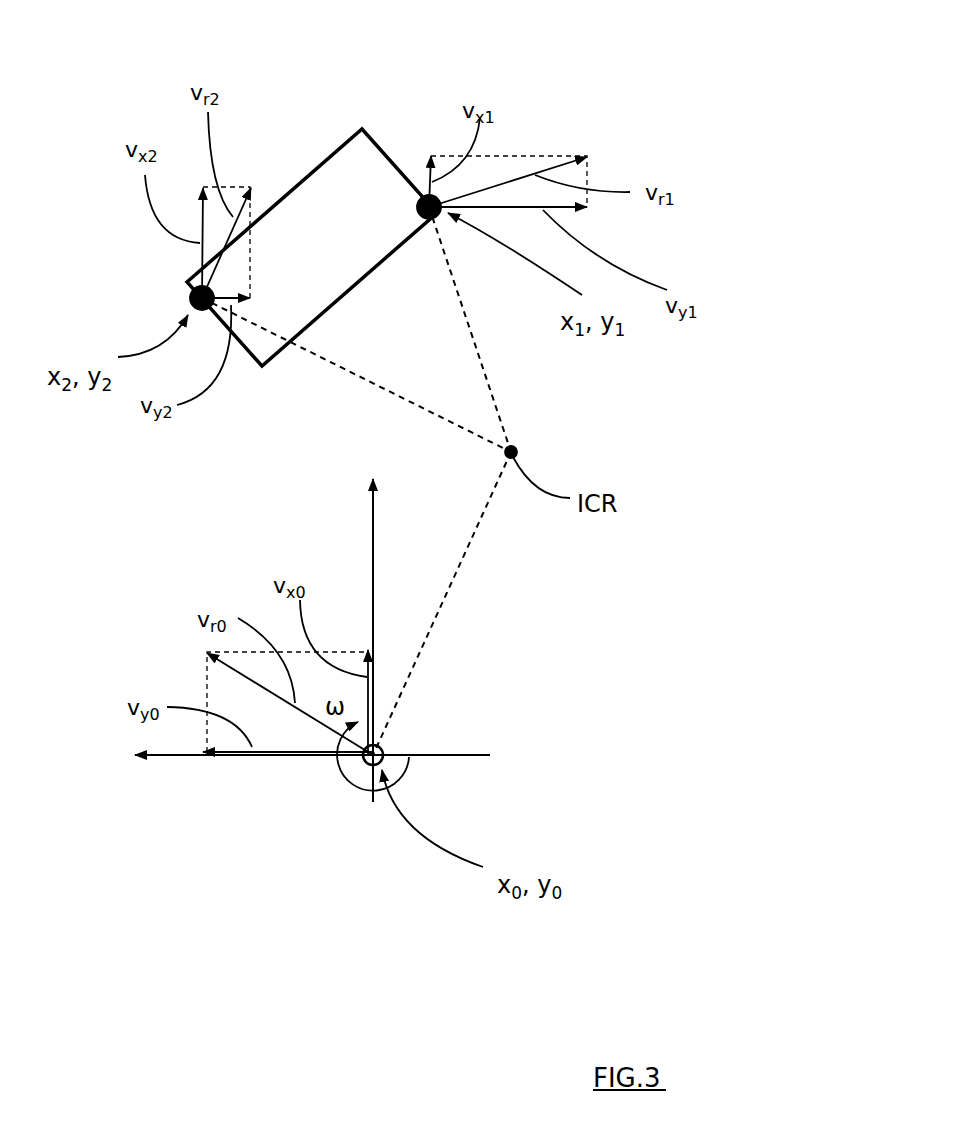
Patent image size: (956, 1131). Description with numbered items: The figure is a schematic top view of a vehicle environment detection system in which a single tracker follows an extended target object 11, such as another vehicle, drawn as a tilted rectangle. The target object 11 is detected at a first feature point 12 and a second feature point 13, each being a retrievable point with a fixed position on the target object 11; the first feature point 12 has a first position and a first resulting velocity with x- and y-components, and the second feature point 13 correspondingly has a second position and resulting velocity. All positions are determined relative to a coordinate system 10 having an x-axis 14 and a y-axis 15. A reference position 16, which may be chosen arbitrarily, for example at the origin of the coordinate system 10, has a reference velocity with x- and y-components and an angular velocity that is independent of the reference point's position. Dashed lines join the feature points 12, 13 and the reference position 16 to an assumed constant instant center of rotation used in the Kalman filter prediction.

The coordinate system 10 is at (422, 698).
The target object 11 is at (362, 155).
The first feature point 12 is at (435, 215).
The second feature point 13 is at (190, 302).
The x-axis 14 is at (375, 577).
The y-axis 15 is at (307, 760).
The reference position 16 is at (366, 767).